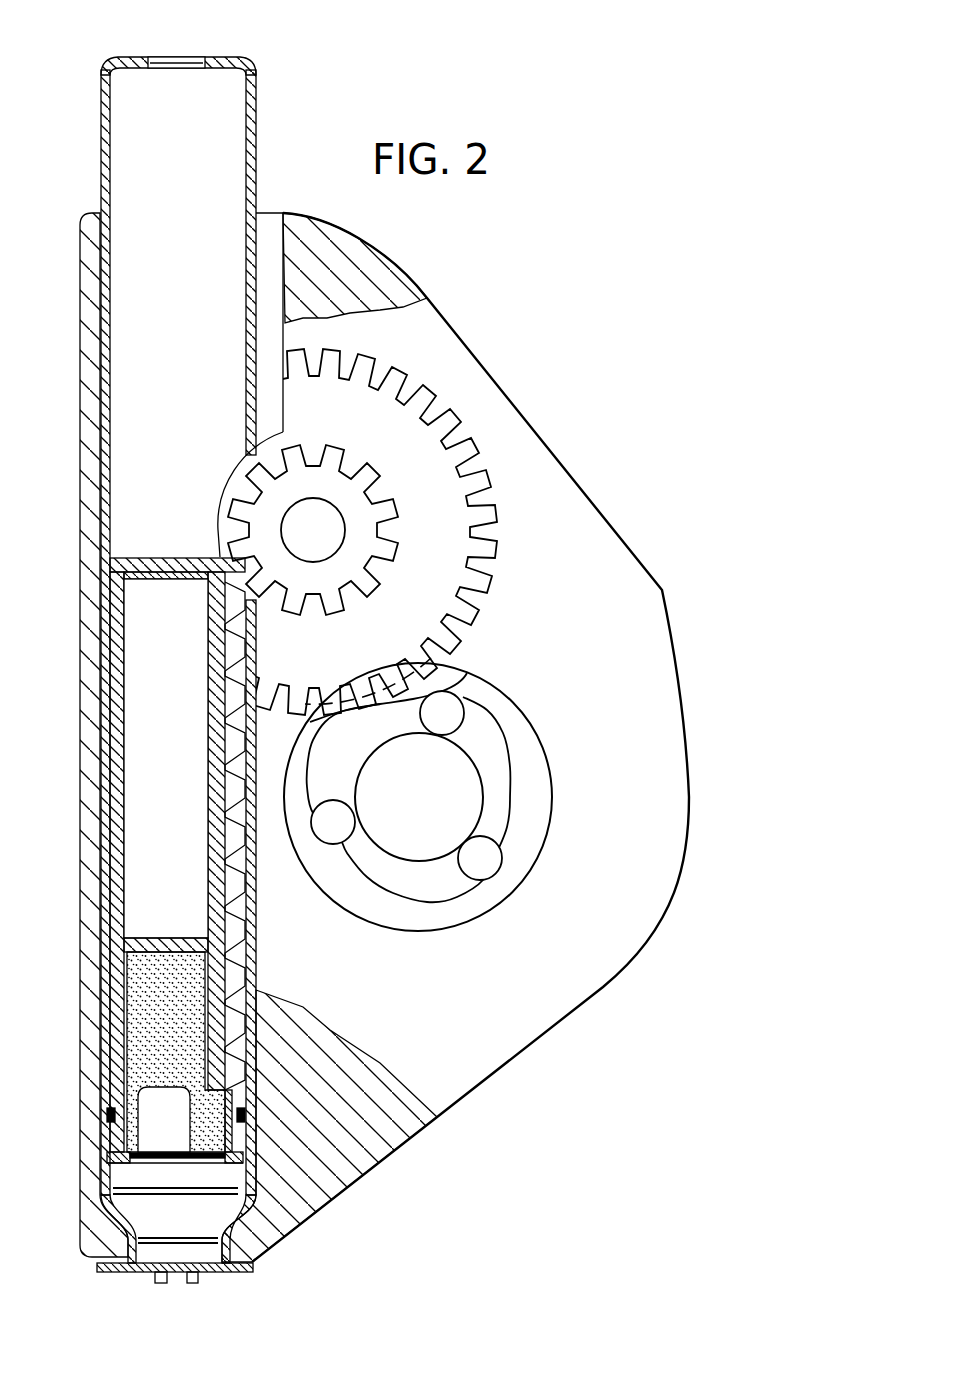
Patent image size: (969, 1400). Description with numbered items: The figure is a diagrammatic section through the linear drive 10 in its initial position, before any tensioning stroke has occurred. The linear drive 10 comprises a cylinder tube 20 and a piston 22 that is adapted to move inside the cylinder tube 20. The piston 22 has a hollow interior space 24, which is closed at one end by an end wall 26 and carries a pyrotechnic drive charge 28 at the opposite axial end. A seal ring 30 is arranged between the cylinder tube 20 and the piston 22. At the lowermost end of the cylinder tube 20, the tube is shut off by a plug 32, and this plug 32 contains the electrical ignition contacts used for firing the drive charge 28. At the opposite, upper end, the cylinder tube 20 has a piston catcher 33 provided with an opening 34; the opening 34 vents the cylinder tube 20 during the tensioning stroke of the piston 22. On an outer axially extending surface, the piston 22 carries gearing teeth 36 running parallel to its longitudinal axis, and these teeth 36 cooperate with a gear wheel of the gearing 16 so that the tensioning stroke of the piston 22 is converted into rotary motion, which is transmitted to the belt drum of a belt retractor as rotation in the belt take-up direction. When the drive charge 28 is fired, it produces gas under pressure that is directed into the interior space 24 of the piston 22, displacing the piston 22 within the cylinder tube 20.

The linear drive 10 is at (228, 602).
The gearing 16 is at (480, 444).
The cylinder tube 20 is at (103, 370).
The piston 22 is at (174, 829).
The hollow interior space 24 is at (140, 790).
The end wall 26 is at (128, 556).
The pyrotechnic drive charge 28 is at (133, 1012).
The seal ring 30 is at (107, 1115).
The plug 32 is at (130, 1215).
The piston catcher 33 is at (234, 62).
The opening 34 is at (173, 57).
The gearing teeth 36 is at (246, 950).